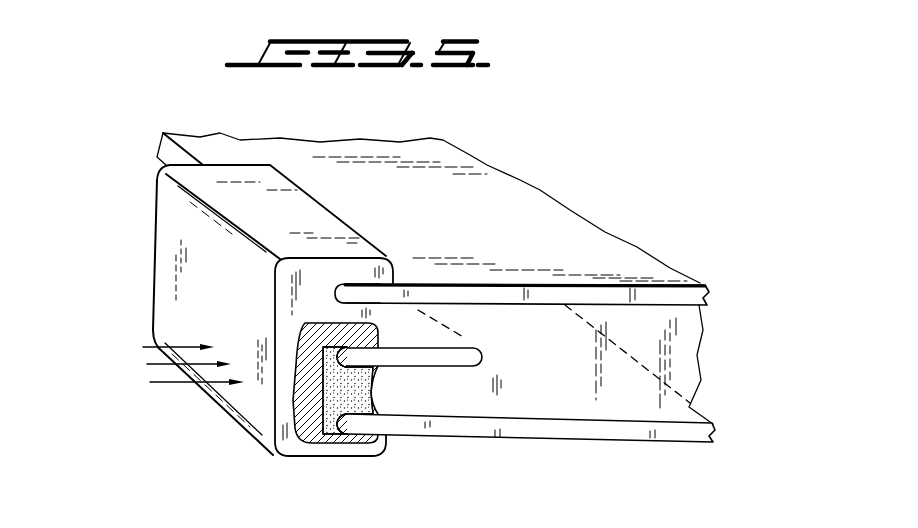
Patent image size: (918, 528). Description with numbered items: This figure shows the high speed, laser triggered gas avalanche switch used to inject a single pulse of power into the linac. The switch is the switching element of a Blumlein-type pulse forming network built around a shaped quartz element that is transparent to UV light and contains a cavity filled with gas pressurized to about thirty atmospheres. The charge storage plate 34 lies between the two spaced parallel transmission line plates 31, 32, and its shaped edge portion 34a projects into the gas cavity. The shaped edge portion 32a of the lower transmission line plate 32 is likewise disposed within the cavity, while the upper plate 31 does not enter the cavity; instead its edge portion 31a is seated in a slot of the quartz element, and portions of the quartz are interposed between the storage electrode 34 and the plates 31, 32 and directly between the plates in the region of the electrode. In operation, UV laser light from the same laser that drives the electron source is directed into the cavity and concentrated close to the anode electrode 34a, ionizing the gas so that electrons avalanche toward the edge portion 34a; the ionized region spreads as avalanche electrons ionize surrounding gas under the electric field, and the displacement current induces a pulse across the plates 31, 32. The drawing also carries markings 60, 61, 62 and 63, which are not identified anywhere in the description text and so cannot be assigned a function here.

The laser light input block assembly 60 is at (130, 262).
The glass block lower edge face 61 is at (228, 418).
The fiber holder 62 is at (332, 394).
The adhesive filler 63 is at (370, 393).
The charge storage plate 34 is at (485, 358).
The shaped edge portion of storage electrode 34a is at (340, 347).
The transmission line plate 31 is at (637, 287).
The edge portion of plate 31a is at (352, 290).
The transmission line plate 32 is at (602, 433).
The shaped edge portion of transmission line plate 32a is at (348, 425).